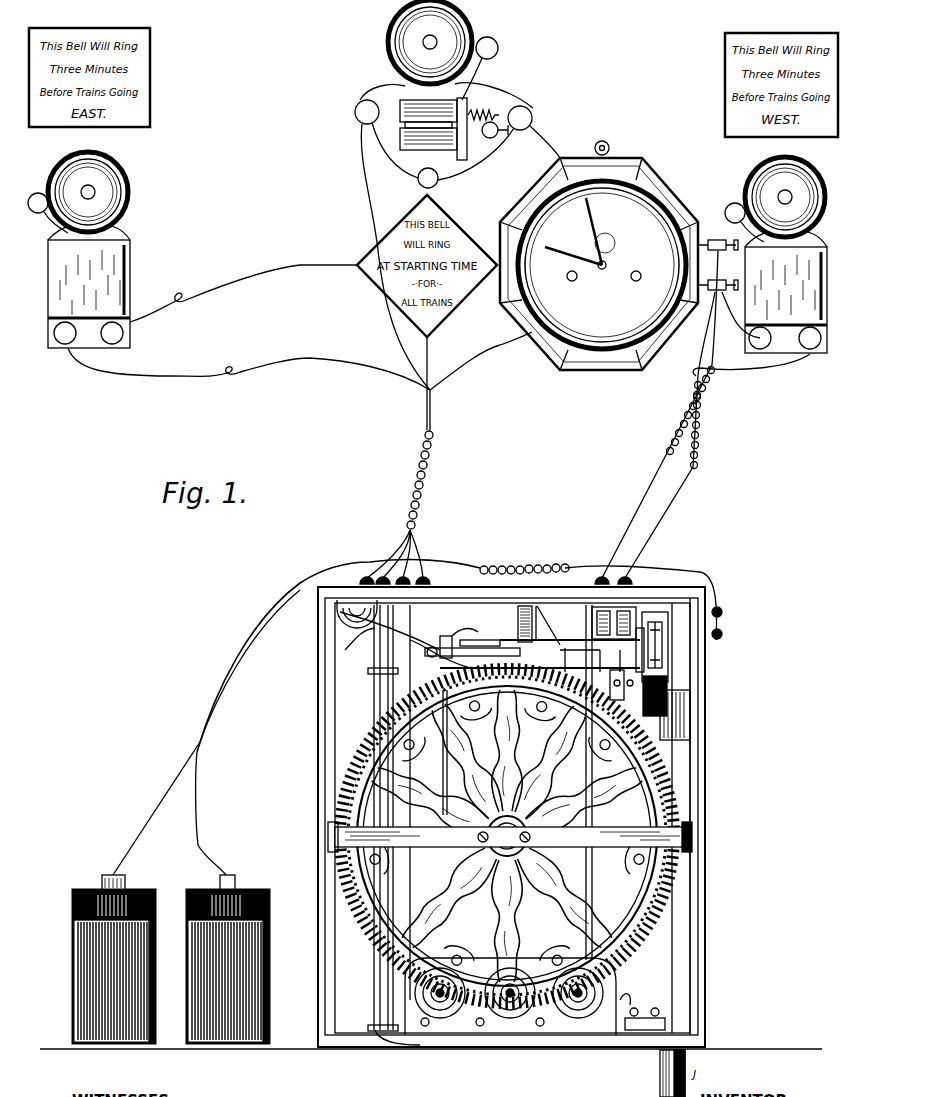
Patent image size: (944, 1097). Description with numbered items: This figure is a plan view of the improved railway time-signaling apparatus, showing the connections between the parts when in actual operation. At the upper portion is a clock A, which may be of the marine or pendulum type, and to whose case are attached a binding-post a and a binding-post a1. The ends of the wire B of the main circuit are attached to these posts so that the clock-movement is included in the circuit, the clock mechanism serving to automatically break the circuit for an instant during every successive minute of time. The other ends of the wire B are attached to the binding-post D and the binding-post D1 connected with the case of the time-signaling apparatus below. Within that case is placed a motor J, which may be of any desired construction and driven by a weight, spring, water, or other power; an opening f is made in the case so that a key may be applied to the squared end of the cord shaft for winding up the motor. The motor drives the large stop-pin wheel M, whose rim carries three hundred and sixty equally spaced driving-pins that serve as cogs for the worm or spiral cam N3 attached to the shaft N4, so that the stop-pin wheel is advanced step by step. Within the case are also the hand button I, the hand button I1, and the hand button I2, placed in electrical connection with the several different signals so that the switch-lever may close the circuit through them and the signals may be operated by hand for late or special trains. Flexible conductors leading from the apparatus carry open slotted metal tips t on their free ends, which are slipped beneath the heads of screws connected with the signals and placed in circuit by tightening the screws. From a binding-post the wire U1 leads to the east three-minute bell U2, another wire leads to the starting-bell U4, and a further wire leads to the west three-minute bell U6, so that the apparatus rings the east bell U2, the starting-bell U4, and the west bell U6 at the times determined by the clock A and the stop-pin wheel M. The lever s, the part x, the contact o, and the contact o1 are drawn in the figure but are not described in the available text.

The east three-minute bell U2 is at (88, 250).
The starting-bell U4 is at (444, 94).
The west three-minute bell U6 is at (776, 255).
The wire U1 is at (249, 327).
The clock A is at (599, 255).
The binding-post a is at (718, 292).
The binding-post a1 is at (718, 236).
The wire of the main circuit B is at (658, 471).
The binding-post D is at (599, 574).
The binding-post D1 is at (634, 578).
The lever s is at (472, 639).
The open slotted metal tip t is at (539, 625).
The electromagnet x is at (603, 623).
The motor J is at (668, 670).
The opening f is at (690, 697).
The worm or spiral cam N3 is at (489, 707).
The shaft N4 is at (537, 700).
The contact o is at (618, 688).
The contact o1 is at (632, 688).
The stop-pin wheel M is at (507, 836).
The hand button or knob I is at (440, 993).
The hand button or knob I1 is at (510, 993).
The hand button or knob I2 is at (578, 993).